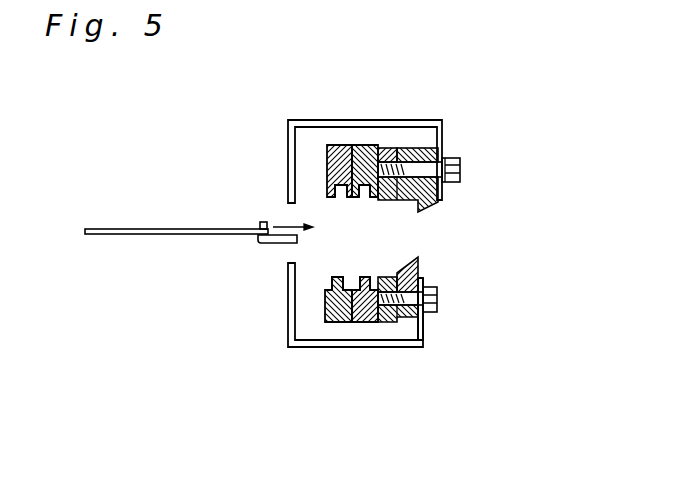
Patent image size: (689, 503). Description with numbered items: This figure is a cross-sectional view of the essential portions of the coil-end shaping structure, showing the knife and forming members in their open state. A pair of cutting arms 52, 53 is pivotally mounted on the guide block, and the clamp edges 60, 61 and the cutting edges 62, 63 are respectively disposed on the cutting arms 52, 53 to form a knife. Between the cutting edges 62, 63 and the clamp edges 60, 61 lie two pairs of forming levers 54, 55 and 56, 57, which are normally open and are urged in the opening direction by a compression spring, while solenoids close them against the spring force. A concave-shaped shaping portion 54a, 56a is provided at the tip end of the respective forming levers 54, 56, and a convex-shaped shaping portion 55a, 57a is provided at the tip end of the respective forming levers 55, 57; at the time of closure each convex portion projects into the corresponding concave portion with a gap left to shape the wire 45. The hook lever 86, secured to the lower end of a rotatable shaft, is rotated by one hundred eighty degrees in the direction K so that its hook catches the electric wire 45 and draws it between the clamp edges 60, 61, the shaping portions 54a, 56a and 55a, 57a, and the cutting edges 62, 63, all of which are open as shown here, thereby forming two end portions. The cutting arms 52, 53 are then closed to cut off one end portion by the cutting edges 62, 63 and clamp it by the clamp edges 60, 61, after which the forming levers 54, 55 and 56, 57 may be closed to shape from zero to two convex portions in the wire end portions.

The electric wire 45 is at (153, 229).
The hook lever 86 is at (259, 221).
The direction of rotation of the hook lever K is at (307, 229).
The clamp edge 60 is at (313, 120).
The clamp edge 61 is at (303, 347).
The cutting edge 63 is at (422, 338).
The forming lever 54 is at (337, 145).
The concave-shaped shaping portion 54a is at (337, 198).
The forming lever 56 is at (365, 145).
The concave-shaped shaping portion 56a is at (365, 198).
The cutting arm 52 is at (388, 148).
The cutting edge 62 is at (420, 150).
The forming lever 55 is at (340, 313).
The convex-shaped shaping portion 55a is at (333, 290).
The forming lever 57 is at (367, 317).
The convex-shaped shaping portion 57a is at (367, 277).
The cutting arm 53 is at (393, 313).